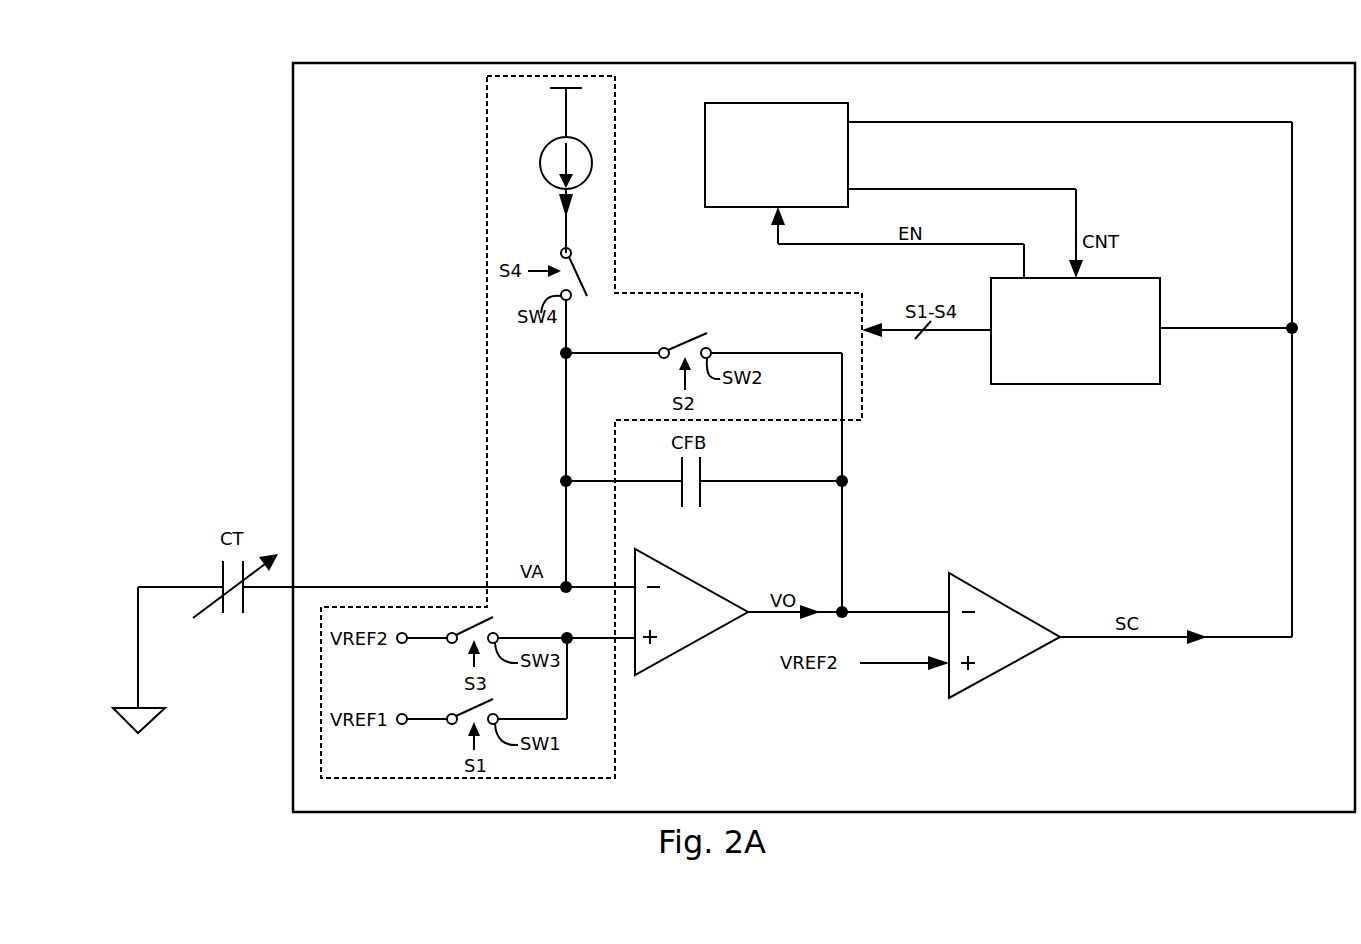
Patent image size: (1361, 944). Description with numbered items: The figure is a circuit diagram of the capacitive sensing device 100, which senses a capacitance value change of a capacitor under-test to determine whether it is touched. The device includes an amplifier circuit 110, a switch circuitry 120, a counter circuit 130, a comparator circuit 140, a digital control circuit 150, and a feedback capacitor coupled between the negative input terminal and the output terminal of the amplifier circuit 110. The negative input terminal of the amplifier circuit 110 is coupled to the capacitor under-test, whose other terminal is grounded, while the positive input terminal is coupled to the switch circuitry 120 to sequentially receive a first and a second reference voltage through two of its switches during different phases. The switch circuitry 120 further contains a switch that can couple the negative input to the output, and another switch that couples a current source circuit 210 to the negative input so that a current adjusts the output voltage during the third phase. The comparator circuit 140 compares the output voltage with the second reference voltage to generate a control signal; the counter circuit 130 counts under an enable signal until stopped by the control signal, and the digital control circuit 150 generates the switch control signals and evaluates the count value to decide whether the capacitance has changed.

The capacitive sensing device 100 is at (293, 272).
The amplifier circuit 110 is at (691, 612).
The switch circuitry 120 is at (487, 260).
The counter circuit 130 is at (776, 155).
The comparator circuit 140 is at (1004, 635).
The digital control circuit 150 is at (1075, 331).
The current source circuit 210 is at (542, 158).